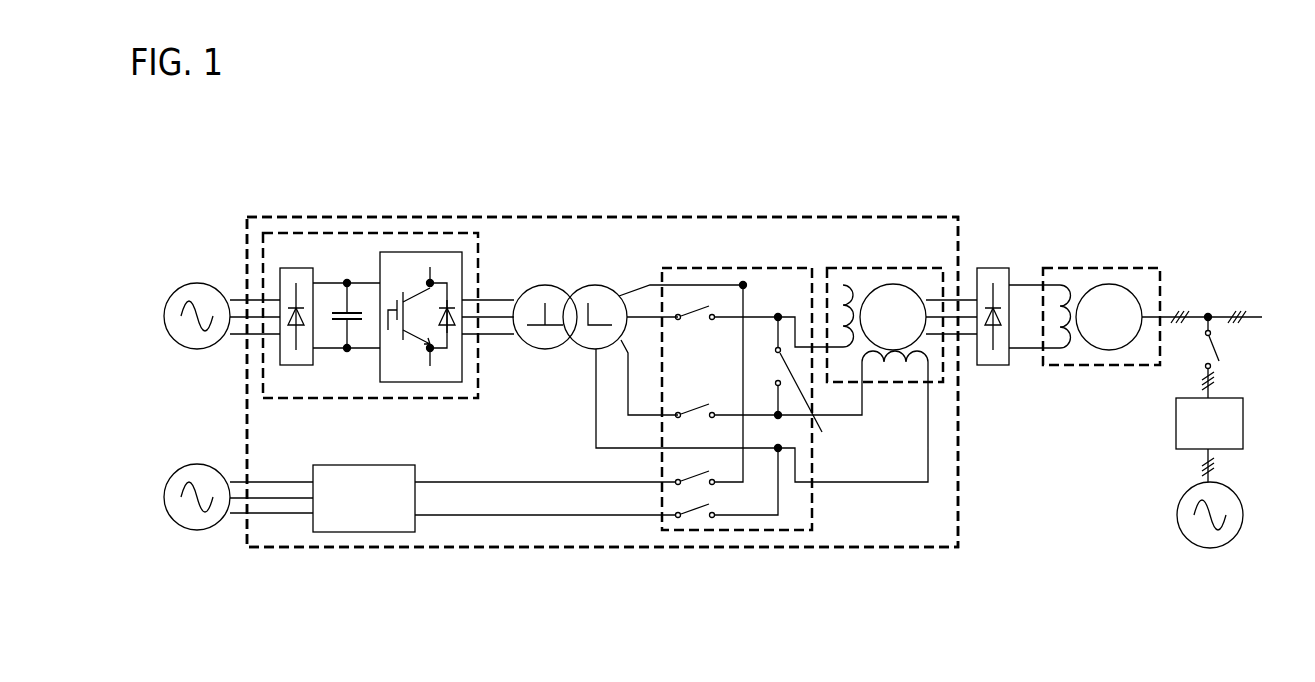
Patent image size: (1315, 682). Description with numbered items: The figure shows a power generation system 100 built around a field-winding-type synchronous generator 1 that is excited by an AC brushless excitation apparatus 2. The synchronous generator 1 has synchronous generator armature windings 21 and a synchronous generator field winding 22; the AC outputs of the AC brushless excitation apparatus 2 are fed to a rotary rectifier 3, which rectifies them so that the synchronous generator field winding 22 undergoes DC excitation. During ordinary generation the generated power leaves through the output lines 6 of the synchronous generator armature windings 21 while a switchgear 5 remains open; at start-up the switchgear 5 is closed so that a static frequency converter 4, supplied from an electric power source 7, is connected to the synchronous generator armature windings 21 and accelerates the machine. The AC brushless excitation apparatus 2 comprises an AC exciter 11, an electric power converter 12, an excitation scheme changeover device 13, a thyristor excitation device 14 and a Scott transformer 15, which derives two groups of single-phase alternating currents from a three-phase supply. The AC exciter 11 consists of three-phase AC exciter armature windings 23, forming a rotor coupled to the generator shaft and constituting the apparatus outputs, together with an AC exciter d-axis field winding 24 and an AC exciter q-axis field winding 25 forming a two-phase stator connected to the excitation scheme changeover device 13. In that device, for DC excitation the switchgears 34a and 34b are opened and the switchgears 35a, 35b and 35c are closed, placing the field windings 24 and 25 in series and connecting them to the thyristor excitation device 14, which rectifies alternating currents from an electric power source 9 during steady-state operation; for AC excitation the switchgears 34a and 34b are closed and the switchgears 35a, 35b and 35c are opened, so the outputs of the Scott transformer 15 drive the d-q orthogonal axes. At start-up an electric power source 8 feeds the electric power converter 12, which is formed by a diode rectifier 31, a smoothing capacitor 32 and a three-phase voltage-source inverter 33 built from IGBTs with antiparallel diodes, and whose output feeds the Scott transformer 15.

The power generation system 100 is at (300, 184).
The AC brushless excitation apparatus 2 is at (660, 217).
The electric power converter 12 is at (478, 265).
The excitation scheme changeover device 13 is at (700, 268).
The AC exciter 11 is at (867, 268).
The synchronous generator 1 is at (1082, 268).
The electric power source 8 is at (199, 349).
The diode rectifier 31 is at (280, 280).
The smoothing capacitor 32 is at (347, 283).
The three-phase voltage-source inverter 33 is at (462, 252).
The Scott transformer 15 is at (566, 291).
The switchgear 34a is at (706, 322).
The switchgear 34b is at (707, 407).
The switchgear 35a is at (674, 478).
The switchgear 35b is at (674, 511).
The switchgear 35c is at (822, 432).
The thyristor excitation device 14 is at (364, 464).
The electric power source 9 is at (215, 464).
The AC exciter armature windings 23 is at (912, 290).
The AC exciter d-axis field winding 24 is at (843, 285).
The AC exciter q-axis field winding 25 is at (927, 366).
The rotary rectifier 3 is at (991, 268).
The synchronous generator field winding 22 is at (1066, 352).
The synchronous generator armature windings 21 is at (1110, 351).
The output lines 6 is at (1262, 317).
The switchgear 5 is at (1220, 354).
The static frequency converter 4 is at (1176, 432).
The electric power source 7 is at (1181, 498).